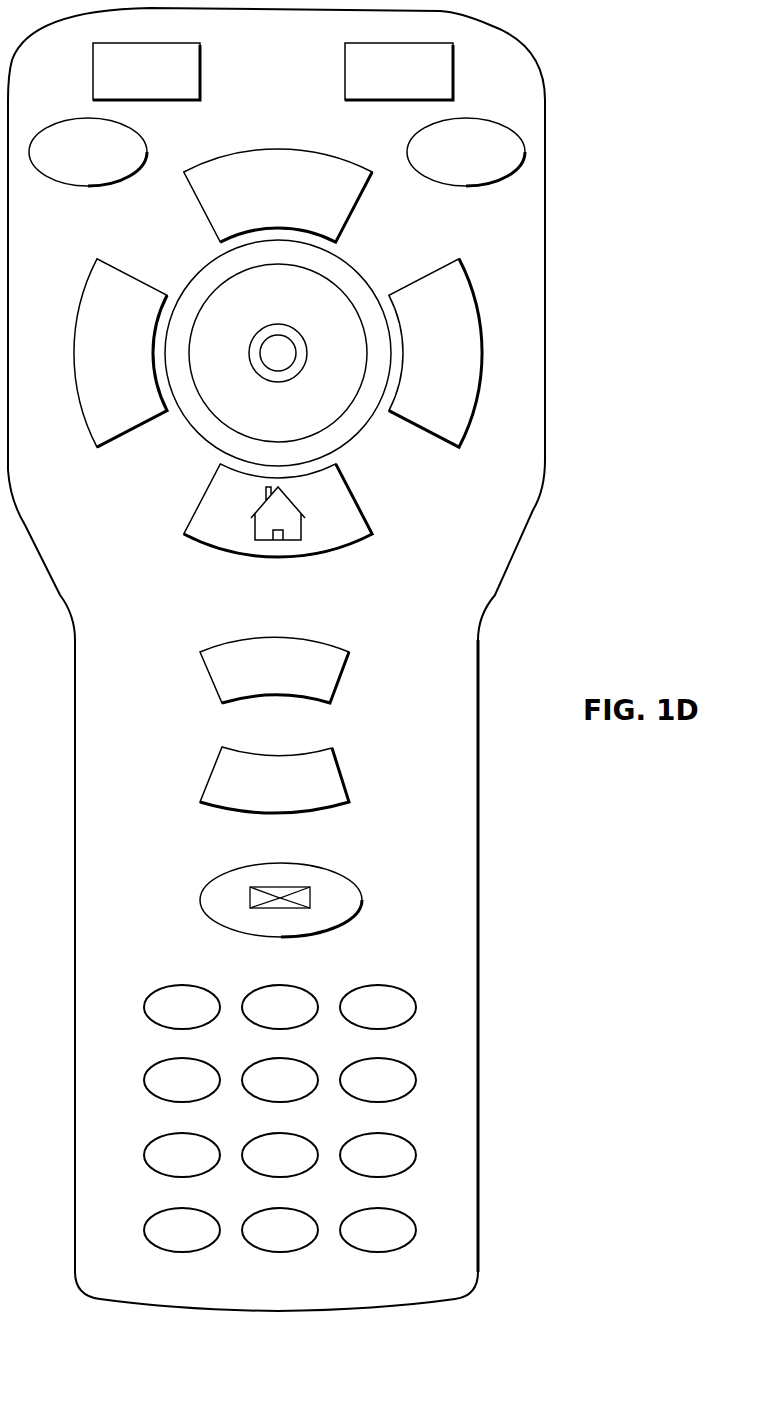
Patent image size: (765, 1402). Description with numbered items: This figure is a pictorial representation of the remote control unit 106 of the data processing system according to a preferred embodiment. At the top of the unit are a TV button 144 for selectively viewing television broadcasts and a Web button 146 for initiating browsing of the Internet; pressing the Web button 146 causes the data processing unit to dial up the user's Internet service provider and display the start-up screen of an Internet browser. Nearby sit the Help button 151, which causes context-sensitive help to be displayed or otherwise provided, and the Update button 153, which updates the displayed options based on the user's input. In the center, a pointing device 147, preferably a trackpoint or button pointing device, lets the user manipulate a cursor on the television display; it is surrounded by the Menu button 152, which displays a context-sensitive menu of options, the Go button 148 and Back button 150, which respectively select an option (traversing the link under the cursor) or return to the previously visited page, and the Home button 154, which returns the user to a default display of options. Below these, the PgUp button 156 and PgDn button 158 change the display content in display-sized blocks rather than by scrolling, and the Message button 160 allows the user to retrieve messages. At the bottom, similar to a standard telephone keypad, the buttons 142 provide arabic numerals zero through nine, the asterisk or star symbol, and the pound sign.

The remote control unit 106 is at (480, 877).
The buttons 142 is at (510, 1247).
The TV button 144 is at (202, 85).
The Web button 146 is at (454, 85).
The pointing device 147 is at (275, 350).
The Go button 148 is at (473, 288).
The Back button 150 is at (80, 296).
The Help button 151 is at (108, 186).
The Menu button 152 is at (243, 150).
The Update button 153 is at (526, 152).
The Home button 154 is at (360, 508).
The PgUp button 156 is at (345, 673).
The PgDn button 158 is at (348, 782).
The Message button 160 is at (363, 899).